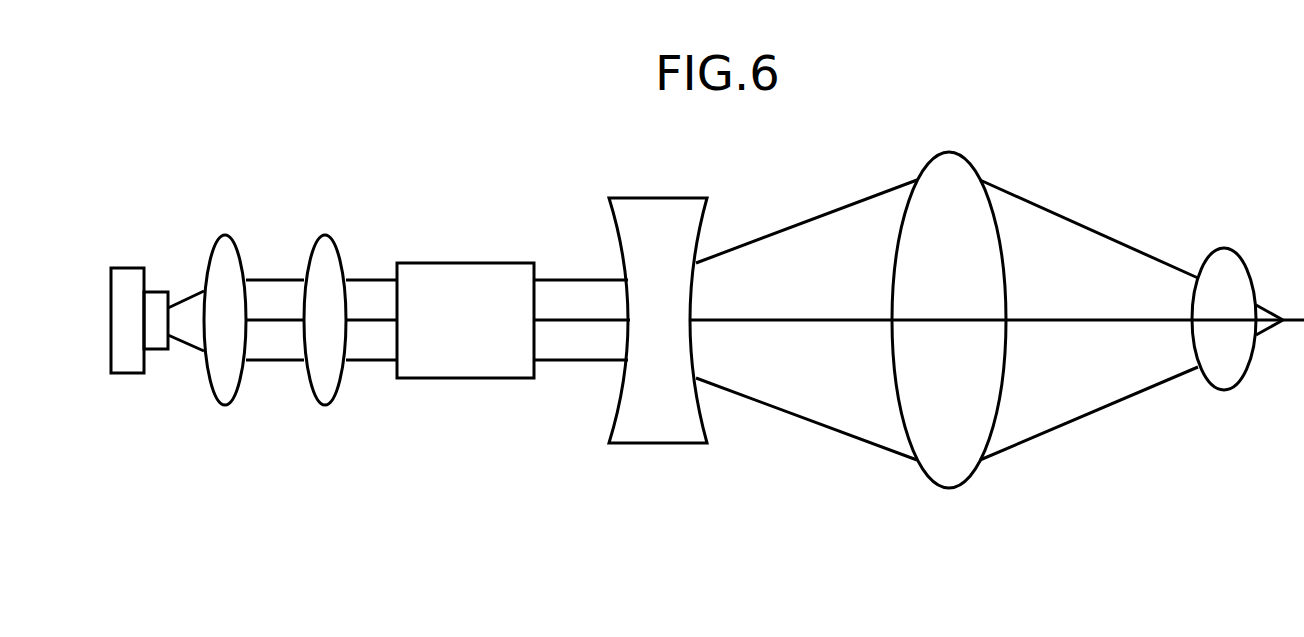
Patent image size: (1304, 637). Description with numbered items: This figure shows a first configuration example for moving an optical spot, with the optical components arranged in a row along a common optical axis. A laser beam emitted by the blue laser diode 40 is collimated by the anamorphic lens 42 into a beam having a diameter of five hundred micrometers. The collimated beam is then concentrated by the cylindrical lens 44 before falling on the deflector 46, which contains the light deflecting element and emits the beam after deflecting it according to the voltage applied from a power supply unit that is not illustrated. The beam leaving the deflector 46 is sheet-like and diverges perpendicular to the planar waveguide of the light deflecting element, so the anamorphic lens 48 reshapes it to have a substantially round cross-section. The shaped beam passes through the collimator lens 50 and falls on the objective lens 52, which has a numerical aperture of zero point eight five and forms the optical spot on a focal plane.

The blue laser diode 40 is at (130, 374).
The anamorphic lens 42 is at (225, 405).
The cylindrical lens 44 is at (325, 405).
The deflector 46 is at (467, 379).
The anamorphic lens 48 is at (660, 444).
The collimator lens 50 is at (950, 489).
The objective lens 52 is at (1225, 391).